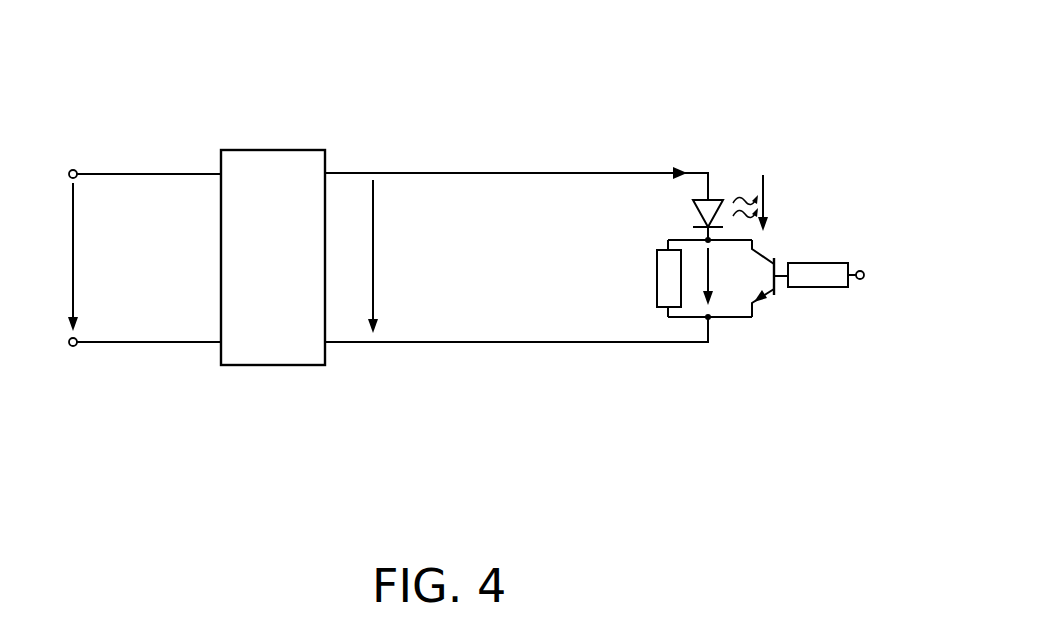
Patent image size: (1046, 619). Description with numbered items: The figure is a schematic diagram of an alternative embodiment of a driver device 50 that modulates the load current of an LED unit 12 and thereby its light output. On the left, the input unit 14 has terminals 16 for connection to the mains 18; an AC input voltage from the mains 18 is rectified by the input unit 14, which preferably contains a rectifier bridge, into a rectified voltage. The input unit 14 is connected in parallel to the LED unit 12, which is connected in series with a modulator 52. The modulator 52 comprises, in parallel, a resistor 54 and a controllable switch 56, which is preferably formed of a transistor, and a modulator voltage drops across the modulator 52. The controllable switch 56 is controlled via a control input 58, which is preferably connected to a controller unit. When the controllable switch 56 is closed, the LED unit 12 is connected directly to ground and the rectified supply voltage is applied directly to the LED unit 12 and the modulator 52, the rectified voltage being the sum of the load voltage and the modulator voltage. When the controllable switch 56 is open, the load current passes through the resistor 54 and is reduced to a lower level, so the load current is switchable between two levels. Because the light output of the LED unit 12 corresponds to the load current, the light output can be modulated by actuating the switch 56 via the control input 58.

The LED unit 12 is at (818, 168).
The input unit 14 is at (292, 392).
The terminals 16 is at (73, 170).
The mains 18 is at (22, 247).
The driver device 50 is at (583, 100).
The modulator 52 is at (727, 362).
The resistor 54 is at (657, 283).
The controllable switch 56 is at (765, 258).
The control input 58 is at (860, 281).